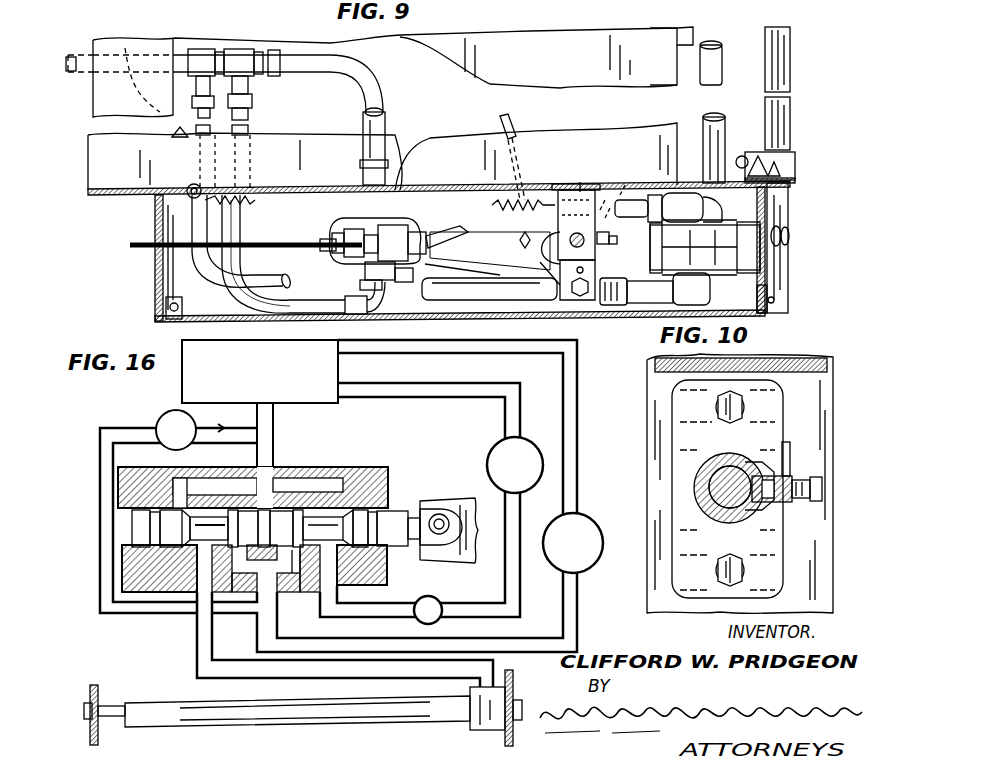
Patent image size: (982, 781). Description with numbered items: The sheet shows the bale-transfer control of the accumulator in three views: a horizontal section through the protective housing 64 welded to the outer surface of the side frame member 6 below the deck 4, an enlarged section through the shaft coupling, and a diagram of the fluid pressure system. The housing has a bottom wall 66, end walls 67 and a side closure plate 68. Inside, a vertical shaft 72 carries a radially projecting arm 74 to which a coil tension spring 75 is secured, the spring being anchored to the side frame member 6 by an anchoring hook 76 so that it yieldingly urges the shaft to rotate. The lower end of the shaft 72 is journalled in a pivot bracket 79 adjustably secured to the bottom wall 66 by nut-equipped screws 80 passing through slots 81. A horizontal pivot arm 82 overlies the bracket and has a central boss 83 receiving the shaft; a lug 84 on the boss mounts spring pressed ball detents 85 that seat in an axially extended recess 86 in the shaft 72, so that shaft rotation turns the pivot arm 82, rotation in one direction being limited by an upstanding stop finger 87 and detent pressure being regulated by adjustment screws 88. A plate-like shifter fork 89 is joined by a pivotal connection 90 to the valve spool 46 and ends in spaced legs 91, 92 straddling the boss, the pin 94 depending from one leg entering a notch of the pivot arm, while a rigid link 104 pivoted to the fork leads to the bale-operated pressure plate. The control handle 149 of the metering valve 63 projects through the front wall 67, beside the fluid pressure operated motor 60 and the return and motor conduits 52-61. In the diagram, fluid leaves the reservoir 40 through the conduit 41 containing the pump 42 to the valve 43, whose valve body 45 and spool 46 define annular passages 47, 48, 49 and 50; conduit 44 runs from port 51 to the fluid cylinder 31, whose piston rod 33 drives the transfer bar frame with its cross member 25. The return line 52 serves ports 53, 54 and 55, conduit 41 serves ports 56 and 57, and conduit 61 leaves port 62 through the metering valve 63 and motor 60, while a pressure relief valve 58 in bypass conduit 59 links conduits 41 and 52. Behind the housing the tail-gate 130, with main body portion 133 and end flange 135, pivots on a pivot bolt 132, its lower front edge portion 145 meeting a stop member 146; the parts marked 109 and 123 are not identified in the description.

In FIG. 9, the deck 4 is at (103, 150).
In FIG. 10, the deck 4 is at (790, 352).
In FIG. 9, the side frame member 6 is at (118, 190).
In FIG. 10, the side frame member 6 is at (810, 360).
In FIG. 16, the side frame member 6 is at (505, 738).
In FIG. 16, the cross member 25 is at (98, 705).
In FIG. 16, the fluid cylinder 31 is at (272, 715).
In FIG. 16, the piston rod 33 is at (118, 718).
In FIG. 16, the reservoir 40 is at (314, 371).
In FIG. 9, the conduit 41 is at (232, 297).
In FIG. 16, the conduit 41 is at (427, 354).
In FIG. 16, the pump 42 is at (587, 538).
In FIG. 9, the valve 43 is at (332, 212).
In FIG. 16, the valve 43 is at (335, 466).
In FIG. 9, the conduit 44 is at (95, 115).
In FIG. 16, the conduit 44 is at (197, 643).
In FIG. 9, the valve body 45 is at (365, 272).
In FIG. 16, the valve body 45 is at (372, 503).
In FIG. 9, the valve spool 46 is at (420, 236).
In FIG. 16, the valve spool 46 is at (395, 514).
In FIG. 16, the annular passage 47 is at (198, 515).
In FIG. 16, the annular passage 48 is at (246, 514).
In FIG. 16, the annular passage 49 is at (300, 515).
In FIG. 16, the annular passage 50 is at (318, 514).
In FIG. 16, the port 51 is at (200, 562).
In FIG. 9, the return line 52 is at (363, 100).
In FIG. 16, the return line 52 is at (270, 446).
In FIG. 16, the port 53 is at (176, 497).
In FIG. 16, the port 54 is at (278, 515).
In FIG. 16, the port 55 is at (360, 500).
In FIG. 16, the port 56 is at (265, 595).
In FIG. 16, the port 57 is at (294, 590).
In FIG. 16, the pressure relief valve 58 is at (162, 418).
In FIG. 16, the conduit 59 is at (100, 486).
In FIG. 9, the fluid pressure operated motor 60 is at (745, 236).
In FIG. 16, the fluid pressure operated motor 60 is at (520, 448).
In FIG. 9, the conduit 61 is at (250, 124).
In FIG. 16, the conduit 61 is at (490, 386).
In FIG. 16, the port 62 is at (365, 565).
In FIG. 9, the metering valve 63 is at (398, 232).
In FIG. 16, the metering valve 63 is at (436, 596).
In FIG. 9, the protective housing 64 is at (150, 274).
In FIG. 10, the protective housing 64 is at (648, 590).
In FIG. 9, the bottom wall 66 is at (283, 200).
In FIG. 10, the bottom wall 66 is at (690, 402).
In FIG. 9, the end wall 67 is at (155, 290).
In FIG. 9, the side closure plate 68 is at (440, 320).
In FIG. 9, the shaft 72 is at (568, 243).
In FIG. 10, the shaft 72 is at (715, 482).
In FIG. 9, the arm 74 is at (602, 192).
In FIG. 9, the coil tension spring 75 is at (262, 196).
In FIG. 9, the anchoring hook 76 is at (188, 186).
In FIG. 9, the pivot bracket 79 is at (572, 300).
In FIG. 10, the pivot bracket 79 is at (677, 521).
In FIG. 10, the nut-equipped screws 80 is at (716, 412).
In FIG. 10, the slots 81 is at (748, 406).
In FIG. 9, the pivot arm 82 is at (596, 270).
In FIG. 9, the boss 83 is at (628, 198).
In FIG. 10, the boss 83 is at (712, 518).
In FIG. 9, the lug 84 is at (610, 245).
In FIG. 10, the ball detents 85 is at (778, 476).
In FIG. 10, the recess 86 is at (760, 470).
In FIG. 10, the stop finger 87 is at (788, 444).
In FIG. 9, the adjustment screws 88 is at (612, 237).
In FIG. 10, the adjustment screws 88 is at (822, 484).
In FIG. 9, the shifter fork 89 is at (503, 250).
In FIG. 16, the shifter fork 89 is at (463, 500).
In FIG. 9, the pivotal connection 90 is at (491, 281).
In FIG. 16, the pivotal connection 90 is at (440, 515).
In FIG. 9, the leg 91 is at (577, 186).
In FIG. 9, the leg 92 is at (568, 292).
In FIG. 9, the pin 94 is at (588, 300).
In FIG. 9, the rigid link 104 is at (512, 122).
In FIG. 9, the pipe 109 is at (725, 125).
In FIG. 9, the frame member 123 is at (693, 34).
In FIG. 9, the tail-gate 130 is at (794, 62).
In FIG. 9, the pivot bolt 132 is at (775, 158).
In FIG. 9, the main body portion 133 is at (790, 52).
In FIG. 9, the end flange 135 is at (796, 160).
In FIG. 9, the lower front edge portion 145 is at (752, 158).
In FIG. 9, the stop member 146 is at (726, 150).
In FIG. 9, the control handle 149 is at (275, 231).
In FIG. 9, the pressure and return hoses 52-61 is at (180, 62).